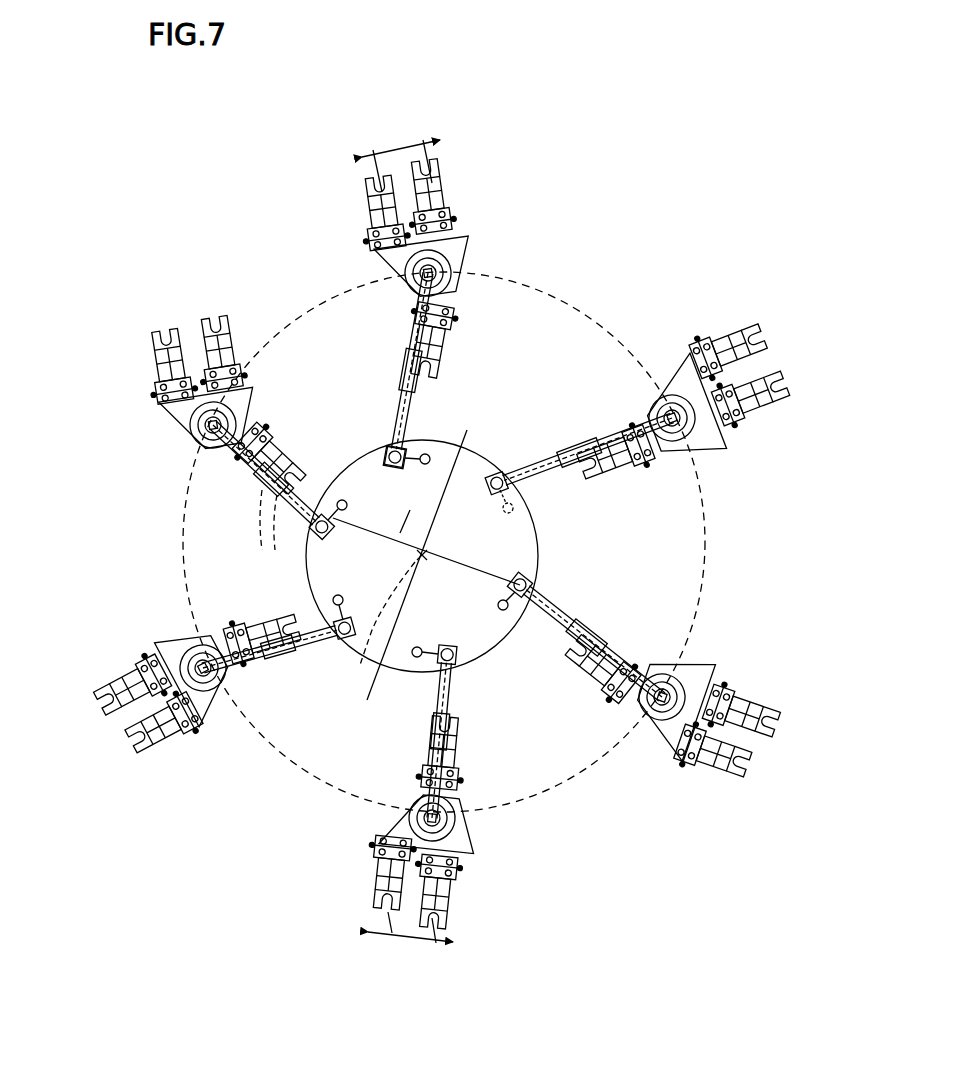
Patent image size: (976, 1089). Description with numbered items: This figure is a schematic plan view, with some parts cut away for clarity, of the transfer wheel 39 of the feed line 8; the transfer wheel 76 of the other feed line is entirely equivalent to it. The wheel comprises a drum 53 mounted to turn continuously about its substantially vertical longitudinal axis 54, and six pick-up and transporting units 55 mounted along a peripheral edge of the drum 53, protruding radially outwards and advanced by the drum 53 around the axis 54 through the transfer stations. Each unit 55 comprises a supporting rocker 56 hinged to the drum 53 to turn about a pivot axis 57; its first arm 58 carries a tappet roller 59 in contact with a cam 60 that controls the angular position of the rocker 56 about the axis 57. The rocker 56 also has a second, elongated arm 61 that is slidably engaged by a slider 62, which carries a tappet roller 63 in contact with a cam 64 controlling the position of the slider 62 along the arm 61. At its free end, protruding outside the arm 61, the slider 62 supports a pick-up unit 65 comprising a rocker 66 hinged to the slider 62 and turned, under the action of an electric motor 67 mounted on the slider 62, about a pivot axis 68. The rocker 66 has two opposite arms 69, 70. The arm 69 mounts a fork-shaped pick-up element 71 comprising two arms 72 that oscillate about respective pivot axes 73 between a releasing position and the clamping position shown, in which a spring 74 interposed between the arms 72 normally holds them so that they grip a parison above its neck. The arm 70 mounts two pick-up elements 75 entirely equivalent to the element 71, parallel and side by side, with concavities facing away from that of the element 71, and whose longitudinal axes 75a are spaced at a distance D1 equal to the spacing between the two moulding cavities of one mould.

The feed line 8 is at (727, 247).
The transfer wheel 39 is at (642, 268).
The transfer wheel 76 is at (444, 542).
The drum 53 is at (485, 650).
The longitudinal axis 54 is at (375, 628).
The pick-up and transporting unit 55 is at (130, 405).
The supporting rocker 56 is at (303, 672).
The pivot axis 57 is at (392, 452).
The first arm 58 is at (413, 465).
The tappet roller 59 is at (427, 455).
The cam 60 is at (520, 516).
The second arm 61 is at (400, 408).
The slider 62 is at (420, 327).
The tappet roller 63 is at (588, 442).
The cam 64 is at (270, 500).
The pick-up unit 65 is at (350, 243).
The rocker 66 is at (382, 268).
The electric motor 67 is at (640, 705).
The pivot axis 68 is at (655, 728).
The arm 69 is at (640, 460).
The arm 70 is at (697, 445).
The pick-up element 71 is at (475, 350).
The arm 72 is at (717, 350).
The pivot axis 73 is at (657, 392).
The spring 74 is at (697, 350).
The pick-up element 75 is at (365, 205).
The longitudinal axis 75a is at (212, 318).
The distance D1 is at (393, 530).